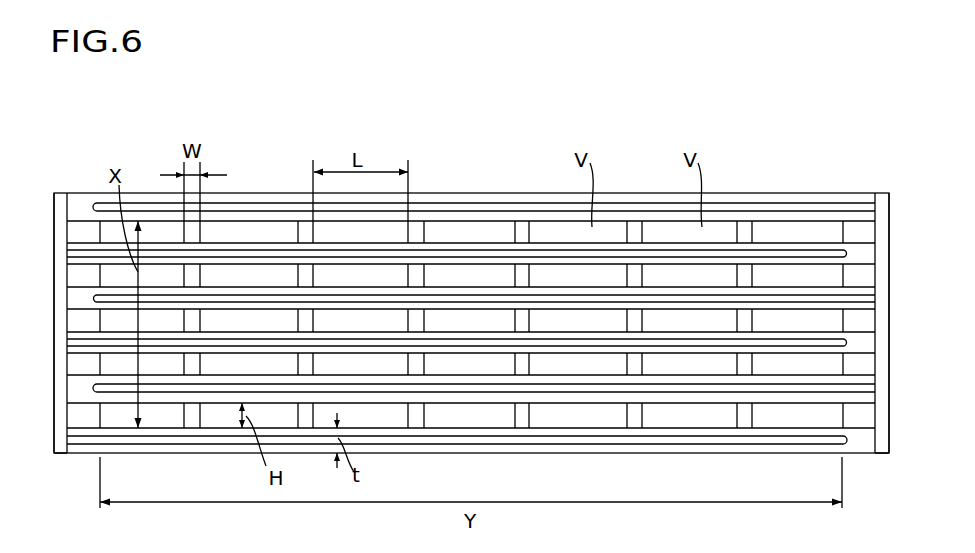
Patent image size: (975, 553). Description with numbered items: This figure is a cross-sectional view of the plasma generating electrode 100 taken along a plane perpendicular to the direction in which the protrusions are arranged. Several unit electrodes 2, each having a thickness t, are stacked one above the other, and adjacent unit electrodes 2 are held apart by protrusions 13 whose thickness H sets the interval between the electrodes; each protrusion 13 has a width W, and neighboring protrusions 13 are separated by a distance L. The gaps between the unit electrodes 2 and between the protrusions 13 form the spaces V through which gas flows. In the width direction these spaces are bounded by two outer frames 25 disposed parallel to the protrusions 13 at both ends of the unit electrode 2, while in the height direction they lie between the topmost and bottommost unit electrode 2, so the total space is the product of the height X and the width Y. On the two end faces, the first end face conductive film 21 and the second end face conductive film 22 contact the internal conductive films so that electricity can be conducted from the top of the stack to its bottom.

The plasma generating electrode 100 is at (748, 145).
The unit electrode 2 is at (468, 240).
The protrusion 13 is at (529, 412).
The first end face conductive film 21 is at (53, 450).
The second end face conductive film 22 is at (891, 441).
The outer frame 25 is at (80, 230).